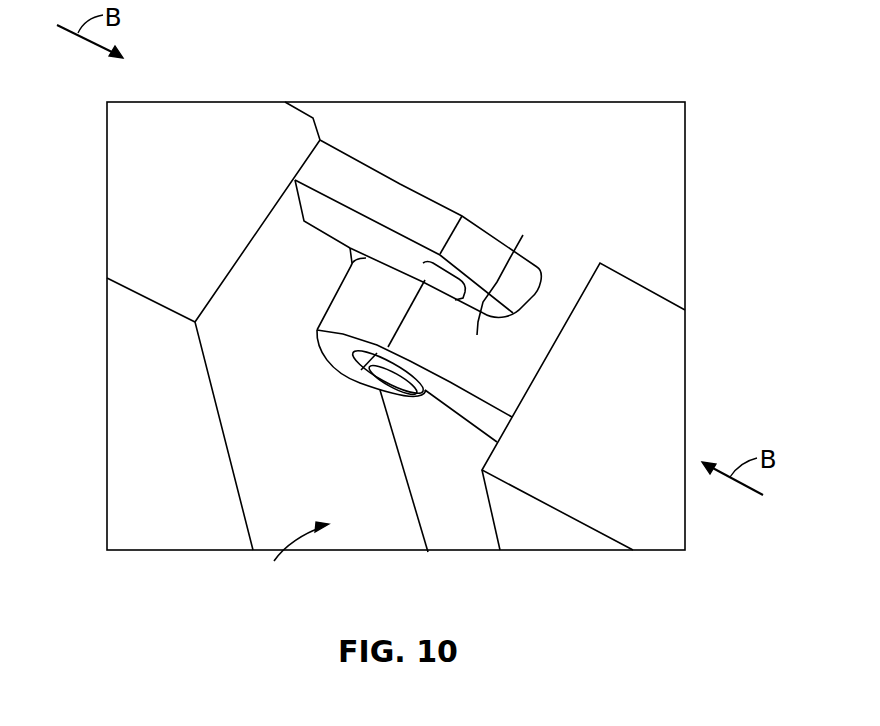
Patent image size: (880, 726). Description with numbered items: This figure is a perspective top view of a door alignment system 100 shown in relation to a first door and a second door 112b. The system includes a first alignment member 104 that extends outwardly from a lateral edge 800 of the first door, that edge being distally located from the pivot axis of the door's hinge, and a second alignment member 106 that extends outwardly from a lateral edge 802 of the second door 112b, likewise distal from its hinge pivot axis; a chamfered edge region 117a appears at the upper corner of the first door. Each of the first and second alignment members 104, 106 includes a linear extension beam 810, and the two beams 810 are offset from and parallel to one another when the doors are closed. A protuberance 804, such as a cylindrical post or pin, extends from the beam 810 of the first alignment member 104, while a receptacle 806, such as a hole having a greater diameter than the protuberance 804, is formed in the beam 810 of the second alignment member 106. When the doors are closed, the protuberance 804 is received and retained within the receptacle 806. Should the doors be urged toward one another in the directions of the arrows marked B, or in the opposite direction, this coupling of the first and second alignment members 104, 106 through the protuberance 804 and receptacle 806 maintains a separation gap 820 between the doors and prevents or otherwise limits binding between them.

The door alignment system 100 is at (575, 57).
The first alignment member 104 is at (382, 190).
The second alignment member 106 is at (507, 353).
The second door 112b is at (652, 323).
The chamfered edge 117a is at (258, 122).
The lateral edge 800 is at (247, 438).
The lateral edge 802 is at (499, 543).
The protuberance 804 is at (380, 386).
The receptacle 806 is at (398, 380).
The linear extension beam 810 is at (437, 203).
The separation gap 820 is at (289, 558).